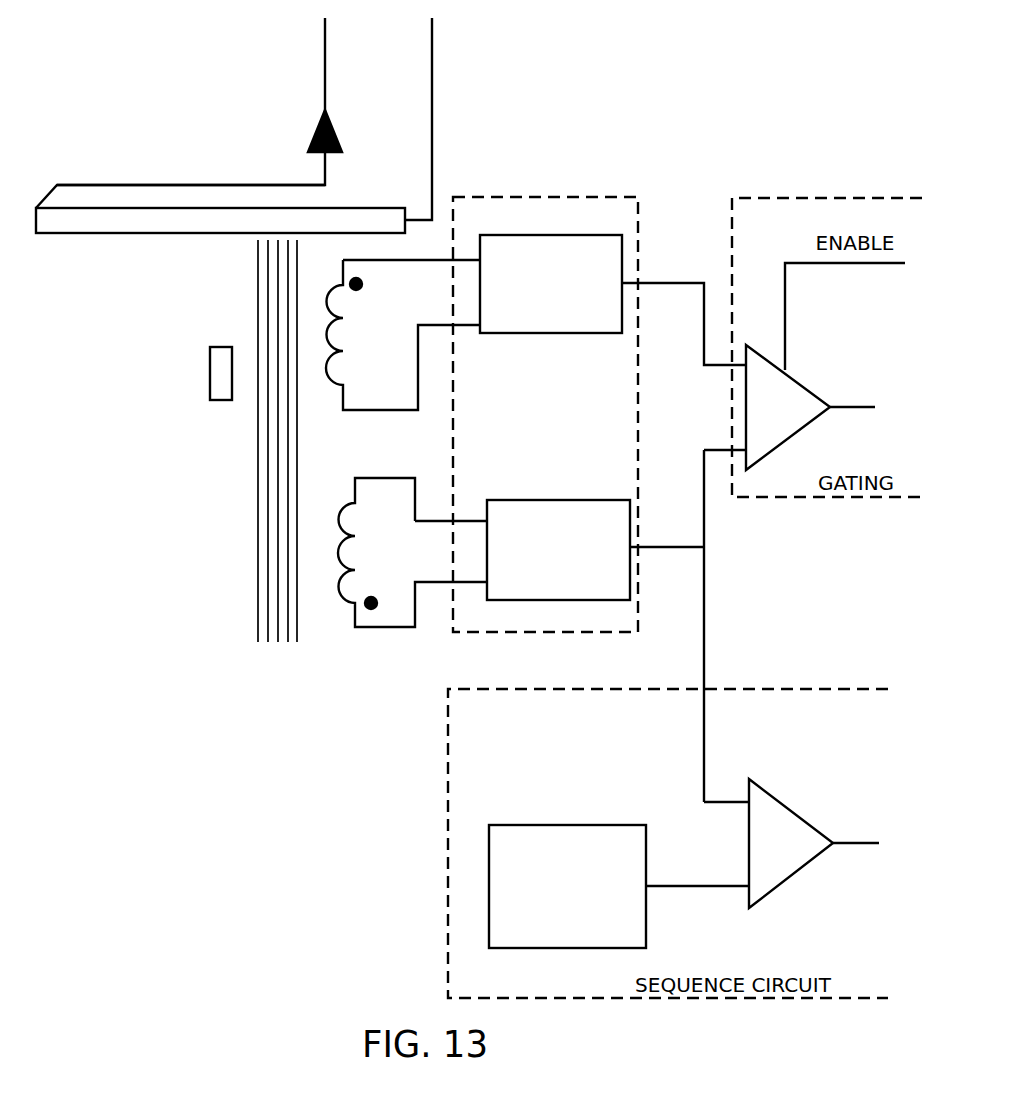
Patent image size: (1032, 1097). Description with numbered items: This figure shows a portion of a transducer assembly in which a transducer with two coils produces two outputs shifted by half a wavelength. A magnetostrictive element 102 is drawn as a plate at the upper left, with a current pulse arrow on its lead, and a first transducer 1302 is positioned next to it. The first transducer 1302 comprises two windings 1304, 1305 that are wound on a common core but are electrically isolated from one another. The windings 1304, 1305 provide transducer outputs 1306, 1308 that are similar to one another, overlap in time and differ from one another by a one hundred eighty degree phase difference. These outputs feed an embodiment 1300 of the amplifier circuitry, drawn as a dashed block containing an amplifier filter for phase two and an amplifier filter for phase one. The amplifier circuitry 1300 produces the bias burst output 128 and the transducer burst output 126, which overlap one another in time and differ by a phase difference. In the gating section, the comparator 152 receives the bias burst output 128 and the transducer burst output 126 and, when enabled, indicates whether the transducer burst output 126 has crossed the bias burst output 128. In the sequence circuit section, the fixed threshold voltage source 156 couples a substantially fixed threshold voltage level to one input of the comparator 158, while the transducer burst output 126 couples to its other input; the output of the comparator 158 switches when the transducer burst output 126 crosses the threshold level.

The magnetostrictive element 102 is at (108, 223).
The first transducer 1302 is at (197, 549).
The winding 1304 is at (333, 363).
The winding 1305 is at (338, 593).
The transducer output 1306 is at (443, 258).
The transducer output 1308 is at (443, 522).
The embodiment of the amplifier circuitry 1300 is at (566, 198).
The bias burst output 128 is at (677, 281).
The transducer burst output 126 is at (707, 579).
The comparator 152 is at (805, 382).
The fixed threshold voltage source 156 is at (512, 825).
The comparator 158 is at (788, 803).